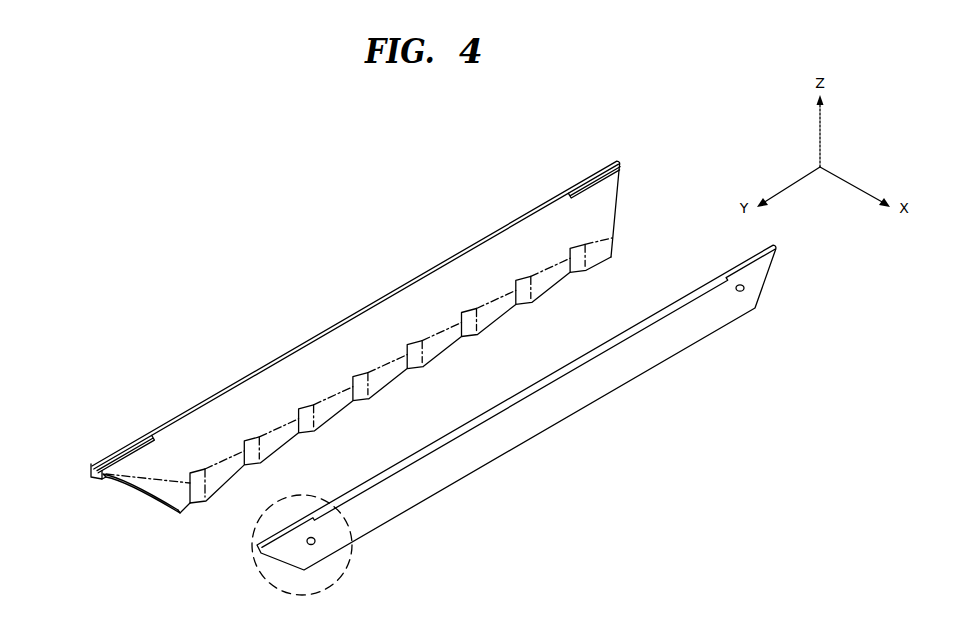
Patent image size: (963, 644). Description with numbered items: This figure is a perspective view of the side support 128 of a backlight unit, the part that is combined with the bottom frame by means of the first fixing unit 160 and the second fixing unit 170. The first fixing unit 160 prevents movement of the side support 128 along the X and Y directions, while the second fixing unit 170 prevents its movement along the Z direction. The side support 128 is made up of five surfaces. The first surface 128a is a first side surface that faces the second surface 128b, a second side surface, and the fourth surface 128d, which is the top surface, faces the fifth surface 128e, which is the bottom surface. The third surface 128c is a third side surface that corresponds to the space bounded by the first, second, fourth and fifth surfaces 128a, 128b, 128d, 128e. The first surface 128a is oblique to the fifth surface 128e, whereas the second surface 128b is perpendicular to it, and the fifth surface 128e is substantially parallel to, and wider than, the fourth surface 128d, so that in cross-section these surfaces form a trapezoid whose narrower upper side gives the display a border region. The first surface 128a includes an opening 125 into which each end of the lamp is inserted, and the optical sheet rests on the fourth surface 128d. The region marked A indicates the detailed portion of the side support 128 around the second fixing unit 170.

The opening 125 is at (586, 280).
The first fixing unit 160 is at (594, 163).
The side support 128 is at (115, 520).
The first surface 128a is at (163, 488).
The second surface 128b is at (259, 566).
The third surface 128c is at (113, 490).
The fourth surface 128d is at (92, 472).
The fifth surface 128e is at (162, 537).
The second fixing unit 170 is at (309, 556).
The region A is at (350, 568).